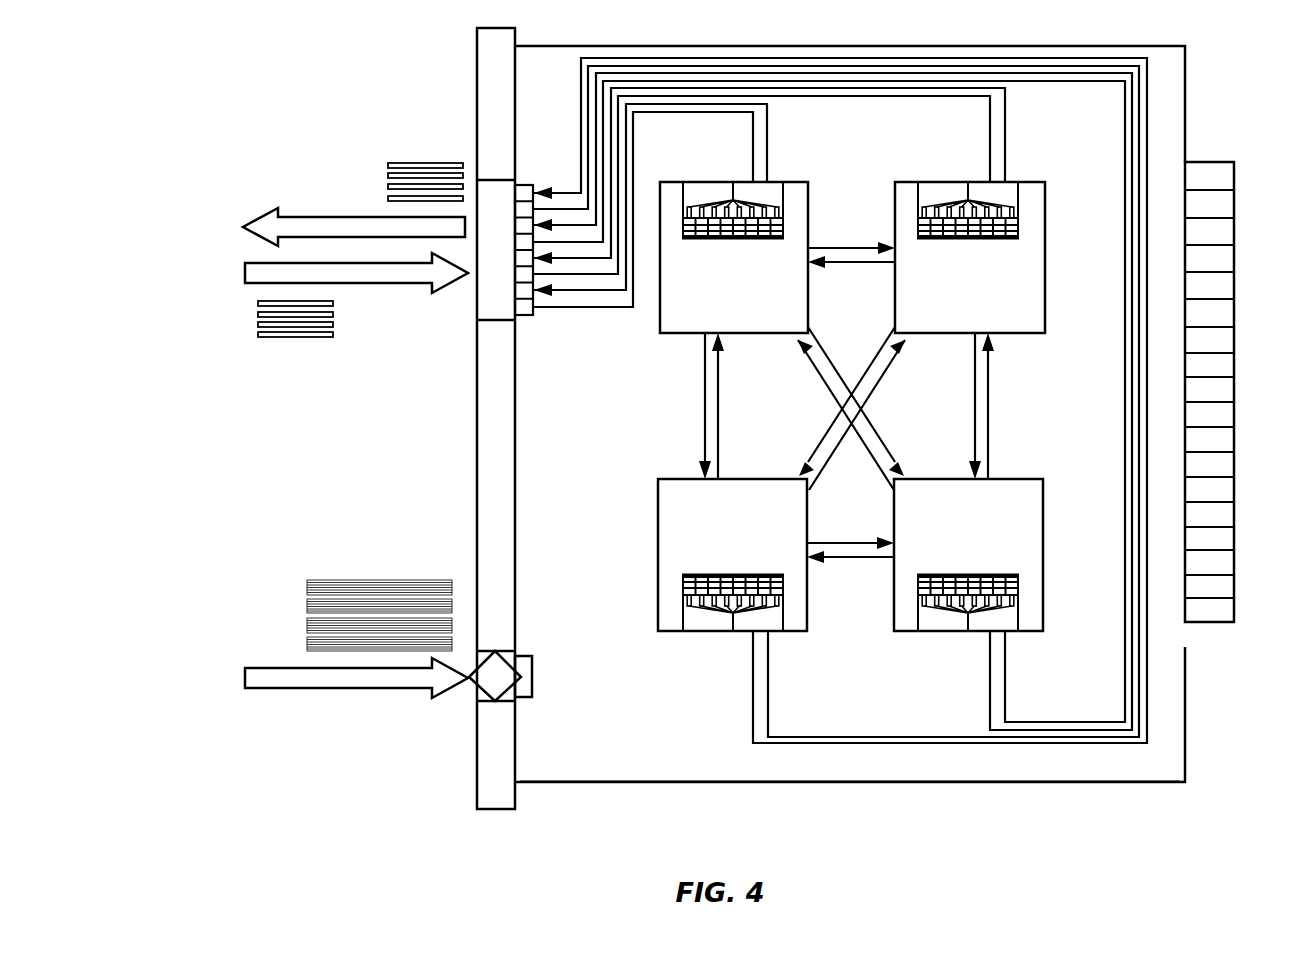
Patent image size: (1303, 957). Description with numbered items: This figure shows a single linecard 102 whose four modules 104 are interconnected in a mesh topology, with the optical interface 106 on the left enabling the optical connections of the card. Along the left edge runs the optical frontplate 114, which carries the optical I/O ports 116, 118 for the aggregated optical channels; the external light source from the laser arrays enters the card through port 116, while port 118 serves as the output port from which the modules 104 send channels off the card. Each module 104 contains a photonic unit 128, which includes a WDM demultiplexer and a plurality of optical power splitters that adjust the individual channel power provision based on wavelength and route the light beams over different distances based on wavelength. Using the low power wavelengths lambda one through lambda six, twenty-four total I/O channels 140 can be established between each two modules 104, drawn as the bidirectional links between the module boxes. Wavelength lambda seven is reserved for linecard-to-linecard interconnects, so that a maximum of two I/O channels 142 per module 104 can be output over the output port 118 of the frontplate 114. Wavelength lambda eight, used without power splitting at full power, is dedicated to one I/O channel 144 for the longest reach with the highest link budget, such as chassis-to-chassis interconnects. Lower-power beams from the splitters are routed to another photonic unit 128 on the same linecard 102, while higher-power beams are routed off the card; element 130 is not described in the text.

The linecard 102 is at (595, 783).
The module 104 is at (851, 406).
The optical interface 106 is at (215, 110).
The optical frontplate 114 is at (492, 788).
The optical I/O port 116 is at (478, 702).
The optical I/O port (output port) 118 is at (498, 202).
The photonic unit 128 is at (698, 180).
The substrate / backplane 130 is at (638, 758).
The I/O channels 140 is at (850, 176).
The I/O channels 142 is at (700, 700).
The I/O channel 144 is at (832, 401).